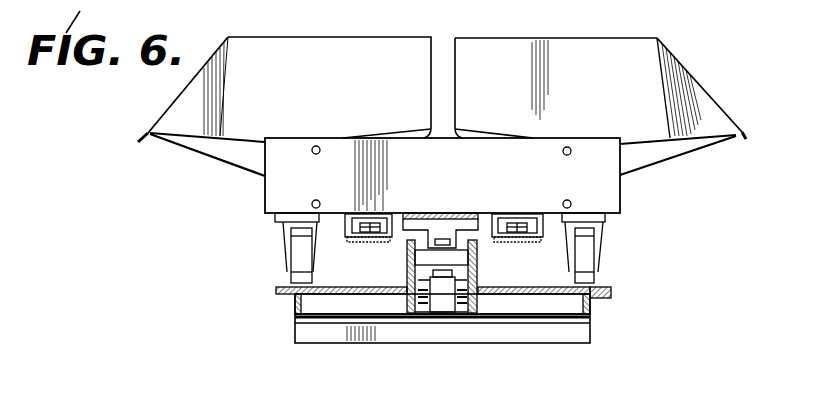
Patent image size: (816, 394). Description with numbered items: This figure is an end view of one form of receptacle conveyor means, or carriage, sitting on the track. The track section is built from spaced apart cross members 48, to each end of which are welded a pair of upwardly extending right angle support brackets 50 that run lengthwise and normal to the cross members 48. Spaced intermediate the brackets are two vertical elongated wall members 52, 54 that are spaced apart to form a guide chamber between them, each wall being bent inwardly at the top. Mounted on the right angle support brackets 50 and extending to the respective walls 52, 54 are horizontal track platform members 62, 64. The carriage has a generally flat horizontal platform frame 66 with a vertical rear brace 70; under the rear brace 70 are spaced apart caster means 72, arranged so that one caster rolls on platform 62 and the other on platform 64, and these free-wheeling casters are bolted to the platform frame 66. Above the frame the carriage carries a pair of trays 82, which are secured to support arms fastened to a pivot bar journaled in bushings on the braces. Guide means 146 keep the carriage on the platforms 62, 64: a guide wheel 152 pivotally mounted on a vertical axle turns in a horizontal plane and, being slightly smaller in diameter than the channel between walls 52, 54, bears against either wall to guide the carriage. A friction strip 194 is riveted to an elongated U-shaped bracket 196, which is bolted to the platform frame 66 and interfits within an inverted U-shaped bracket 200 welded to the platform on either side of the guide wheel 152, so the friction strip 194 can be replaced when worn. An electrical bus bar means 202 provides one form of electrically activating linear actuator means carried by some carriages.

The cross members 48 is at (402, 333).
The right angle support brackets 50 is at (295, 310).
The vertical elongated wall member 52 is at (478, 272).
The vertical elongated wall member 54 is at (405, 275).
The horizontal track platform member 62 is at (605, 288).
The horizontal track platform member 64 is at (282, 282).
The platform frame 66 is at (608, 222).
The vertical rear brace 70 is at (442, 175).
The caster means 72 is at (283, 262).
The trays 82 is at (442, 106).
The guide means 146 is at (400, 235).
The guide wheel 152 is at (455, 258).
The friction strip 194 is at (532, 243).
The U-shaped bracket 196 is at (527, 218).
The inverted U-shaped bracket 200 is at (508, 214).
The electrical bus bar means 202 is at (460, 320).